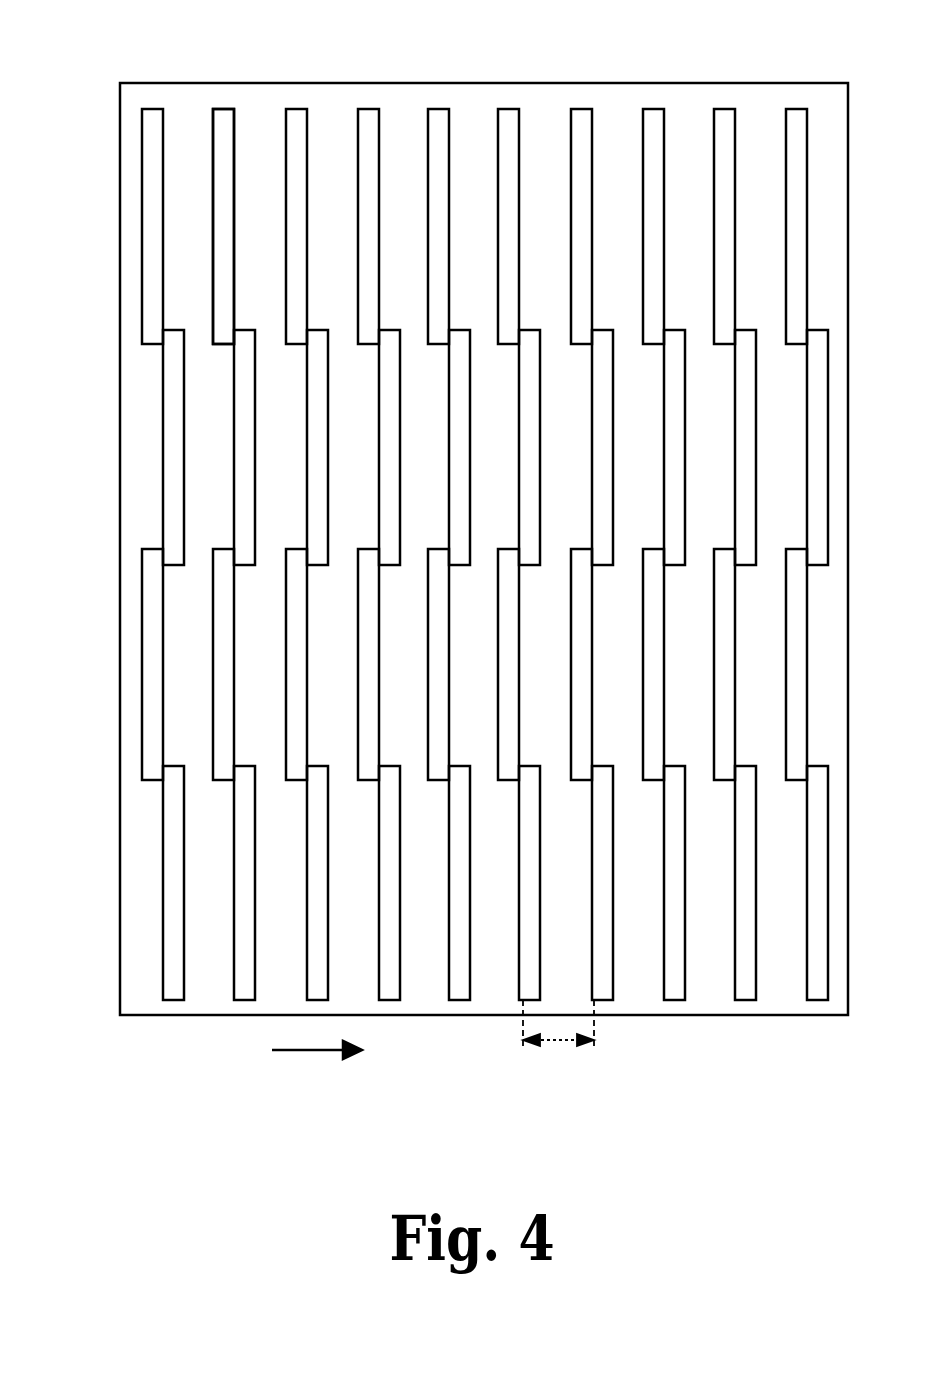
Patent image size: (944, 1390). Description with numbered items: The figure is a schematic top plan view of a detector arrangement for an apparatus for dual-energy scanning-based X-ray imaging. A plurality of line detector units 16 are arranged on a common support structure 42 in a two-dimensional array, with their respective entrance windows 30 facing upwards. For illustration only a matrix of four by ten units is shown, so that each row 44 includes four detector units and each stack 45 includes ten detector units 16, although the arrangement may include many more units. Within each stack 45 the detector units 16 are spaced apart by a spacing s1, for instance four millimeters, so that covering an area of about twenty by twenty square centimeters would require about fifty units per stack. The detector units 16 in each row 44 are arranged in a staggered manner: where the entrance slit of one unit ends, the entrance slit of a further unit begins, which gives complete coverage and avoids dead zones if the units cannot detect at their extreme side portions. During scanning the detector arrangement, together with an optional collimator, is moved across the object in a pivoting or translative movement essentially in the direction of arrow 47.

The common support structure 42 is at (120, 157).
The entrance window 30 is at (225, 135).
The line detector unit 16 is at (233, 126).
The row 44 is at (132, 1030).
The stack 45 is at (98, 768).
The arrow 47 is at (295, 1050).
The spacing s1 is at (558, 1042).